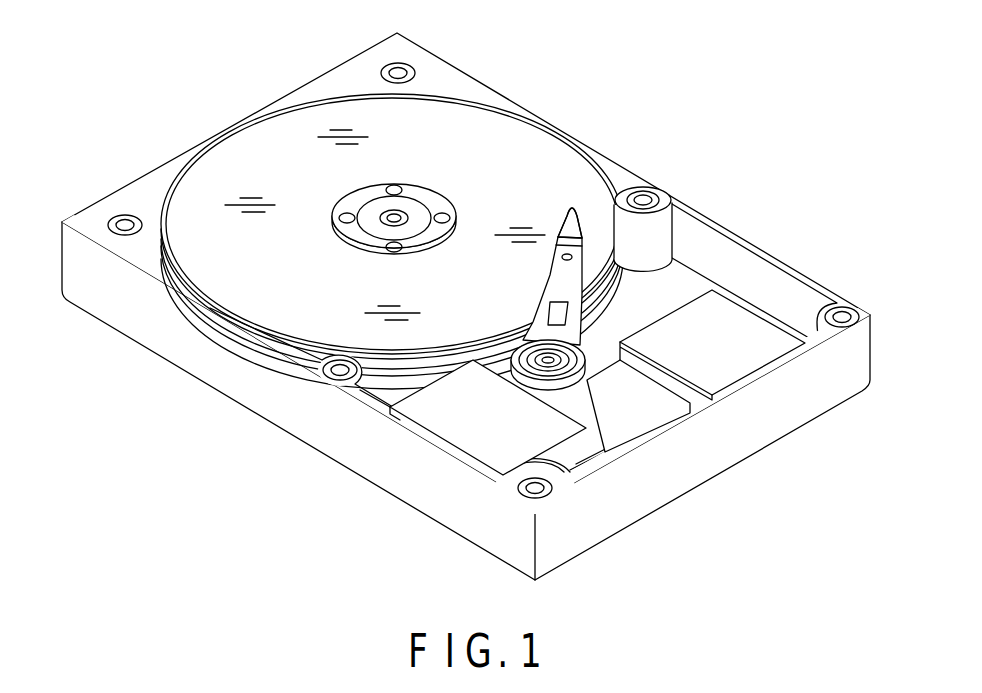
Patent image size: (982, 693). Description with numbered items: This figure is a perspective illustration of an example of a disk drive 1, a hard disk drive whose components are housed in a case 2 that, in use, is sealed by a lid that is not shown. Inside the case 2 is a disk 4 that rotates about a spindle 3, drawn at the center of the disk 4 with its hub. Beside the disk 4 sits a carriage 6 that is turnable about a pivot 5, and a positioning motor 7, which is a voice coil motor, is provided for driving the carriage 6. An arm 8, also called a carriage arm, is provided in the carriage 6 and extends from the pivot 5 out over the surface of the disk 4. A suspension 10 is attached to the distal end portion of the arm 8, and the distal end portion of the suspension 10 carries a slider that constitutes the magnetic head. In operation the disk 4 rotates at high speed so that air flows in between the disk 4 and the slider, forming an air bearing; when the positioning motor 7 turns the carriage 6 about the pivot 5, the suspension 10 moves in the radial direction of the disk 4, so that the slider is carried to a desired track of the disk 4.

The disk drive 1 is at (466, 306).
The case 2 is at (262, 402).
The spindle 3 is at (402, 212).
The disk 4 is at (508, 145).
The pivot 5 is at (566, 378).
The carriage 6 is at (590, 335).
The positioning motor 7 is at (473, 442).
The arm 8 is at (578, 230).
The suspension 10 is at (560, 226).